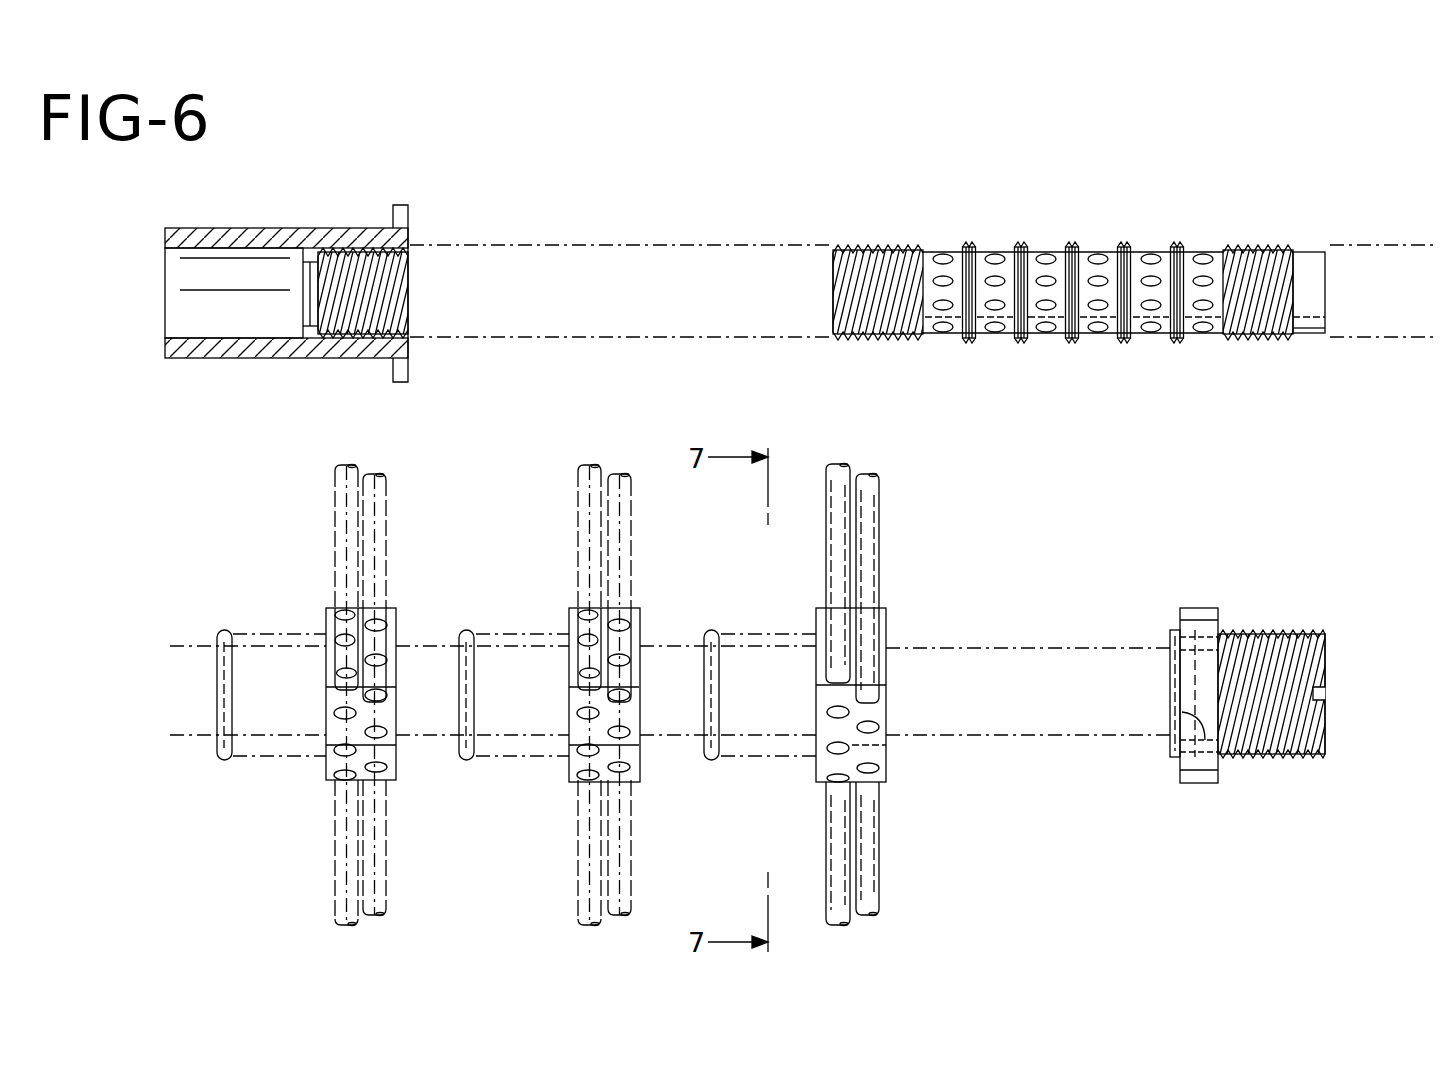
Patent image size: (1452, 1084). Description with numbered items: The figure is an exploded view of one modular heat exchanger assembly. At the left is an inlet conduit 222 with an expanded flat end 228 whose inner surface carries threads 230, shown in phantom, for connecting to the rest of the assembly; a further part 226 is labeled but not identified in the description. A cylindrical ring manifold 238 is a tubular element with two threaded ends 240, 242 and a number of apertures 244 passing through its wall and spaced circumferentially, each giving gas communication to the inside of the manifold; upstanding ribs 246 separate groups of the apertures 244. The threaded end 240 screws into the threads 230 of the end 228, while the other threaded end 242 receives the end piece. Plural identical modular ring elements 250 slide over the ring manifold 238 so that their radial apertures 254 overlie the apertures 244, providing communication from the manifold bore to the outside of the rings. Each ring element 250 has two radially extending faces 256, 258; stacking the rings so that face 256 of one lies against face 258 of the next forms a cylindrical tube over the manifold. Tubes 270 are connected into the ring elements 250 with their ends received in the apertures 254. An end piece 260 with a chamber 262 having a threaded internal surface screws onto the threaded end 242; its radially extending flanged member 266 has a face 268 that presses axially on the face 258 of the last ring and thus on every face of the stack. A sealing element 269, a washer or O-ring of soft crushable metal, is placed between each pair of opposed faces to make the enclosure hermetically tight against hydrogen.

The inlet conduit 222 is at (192, 228).
The body wall 226 is at (410, 362).
The expanded flat end 228 is at (406, 205).
The threads 230 is at (410, 290).
The cylindrical ring manifold 238 is at (1010, 335).
The threaded end 240 is at (885, 248).
The threaded end 242 is at (1255, 250).
The apertures 244 is at (1093, 250).
The upstanding ribs 246 is at (1180, 335).
The modular ring elements 250 is at (395, 762).
The apertures 254 is at (333, 715).
The radially extending face 256 is at (325, 628).
The radially extending face 258 is at (398, 636).
The end piece 260 is at (1318, 752).
The chamber 262 is at (1180, 705).
The flanged member 266 is at (1208, 620).
The face 268 is at (1180, 610).
The sealing element 269 is at (180, 648).
The tubes 270 is at (335, 808).